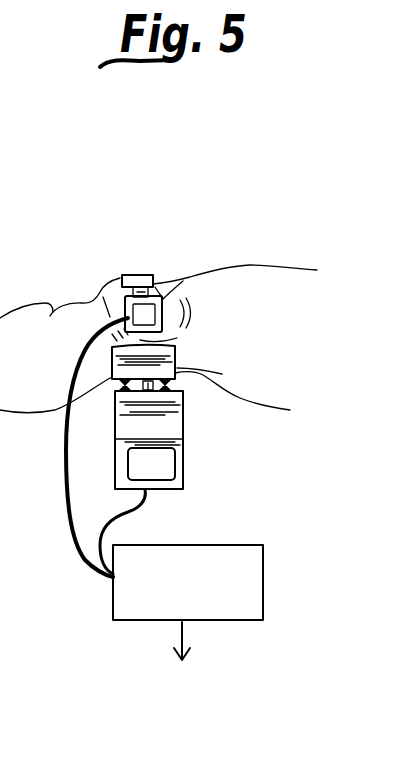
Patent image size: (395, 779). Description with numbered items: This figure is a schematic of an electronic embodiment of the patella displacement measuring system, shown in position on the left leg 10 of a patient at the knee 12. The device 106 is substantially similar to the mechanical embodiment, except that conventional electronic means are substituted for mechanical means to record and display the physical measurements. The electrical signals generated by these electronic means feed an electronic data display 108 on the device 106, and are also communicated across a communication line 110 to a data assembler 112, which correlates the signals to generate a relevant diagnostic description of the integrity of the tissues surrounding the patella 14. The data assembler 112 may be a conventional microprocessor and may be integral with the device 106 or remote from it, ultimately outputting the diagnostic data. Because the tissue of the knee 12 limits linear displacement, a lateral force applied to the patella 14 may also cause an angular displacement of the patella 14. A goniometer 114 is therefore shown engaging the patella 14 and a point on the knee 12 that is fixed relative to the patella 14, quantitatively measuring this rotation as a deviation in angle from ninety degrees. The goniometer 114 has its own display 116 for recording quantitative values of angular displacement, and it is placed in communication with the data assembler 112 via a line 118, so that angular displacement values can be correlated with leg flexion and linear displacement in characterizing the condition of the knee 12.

The left leg 10 is at (282, 271).
The knee 12 is at (100, 304).
The patella 14 is at (112, 302).
The goniometer 114 is at (172, 287).
The display 116 is at (182, 285).
The device 106 is at (182, 421).
The electronic data display 108 is at (182, 463).
The communication line 110 is at (143, 503).
The data assembler 112 is at (265, 552).
The line 118 is at (66, 470).